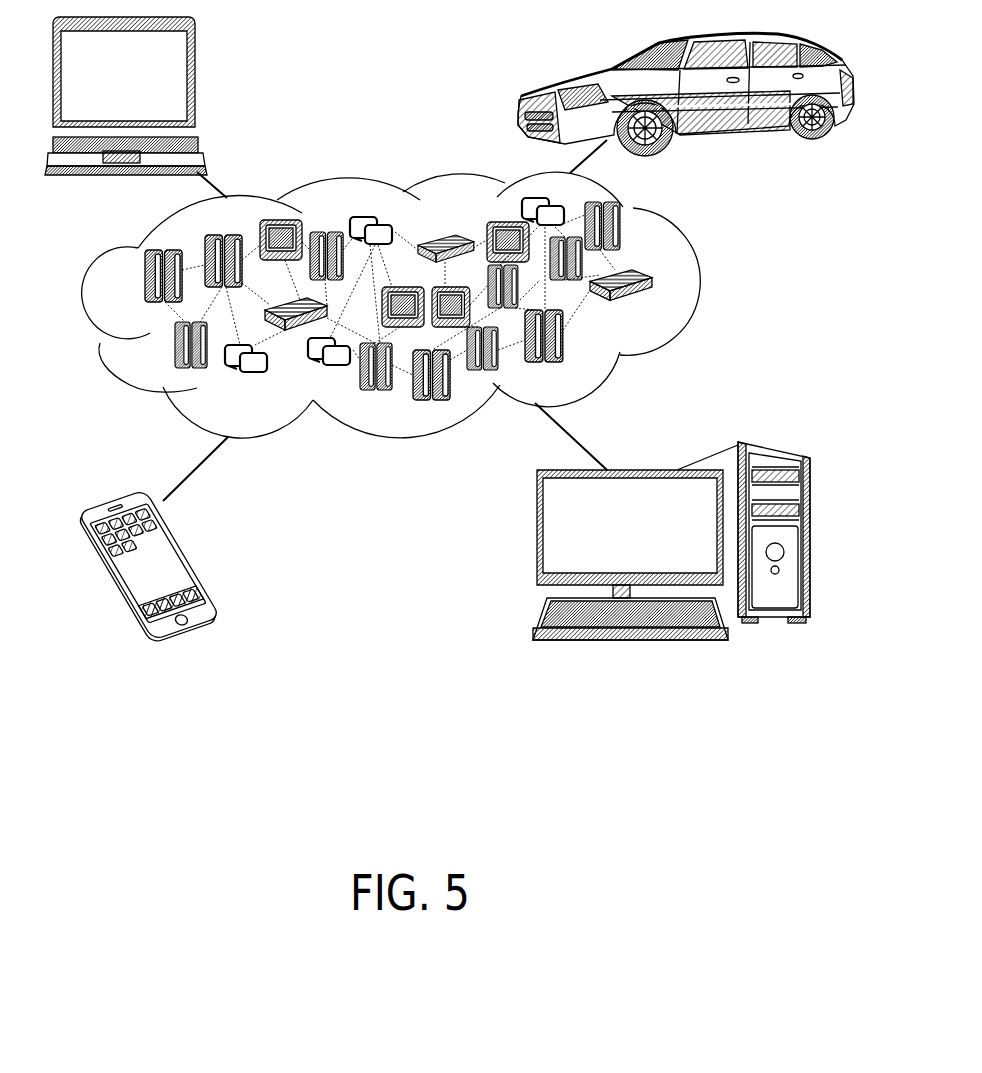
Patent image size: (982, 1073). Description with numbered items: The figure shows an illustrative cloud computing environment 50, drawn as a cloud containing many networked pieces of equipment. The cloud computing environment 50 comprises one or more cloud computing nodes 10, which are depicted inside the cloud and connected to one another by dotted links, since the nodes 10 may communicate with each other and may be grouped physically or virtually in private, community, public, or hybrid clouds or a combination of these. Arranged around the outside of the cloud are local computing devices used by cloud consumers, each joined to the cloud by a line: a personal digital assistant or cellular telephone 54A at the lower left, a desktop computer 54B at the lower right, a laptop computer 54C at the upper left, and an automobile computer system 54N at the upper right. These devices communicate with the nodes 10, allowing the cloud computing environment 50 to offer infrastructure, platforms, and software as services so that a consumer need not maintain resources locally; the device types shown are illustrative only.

The cloud computing node 10 is at (650, 296).
The cloud computing environment 50 is at (416, 305).
The personal digital assistant or cellular telephone 54A is at (172, 556).
The desktop computer 54B is at (712, 462).
The laptop computer 54C is at (178, 91).
The automobile computer system 54N is at (520, 101).